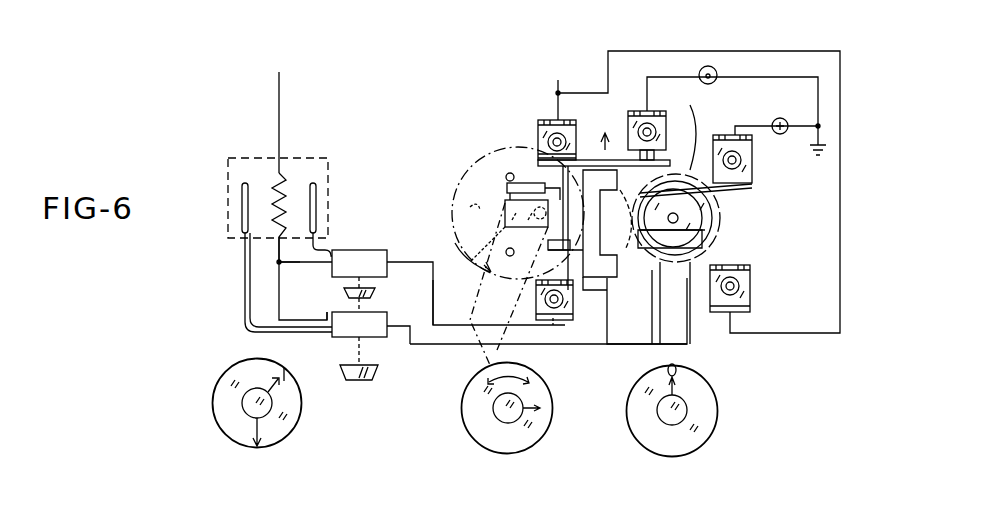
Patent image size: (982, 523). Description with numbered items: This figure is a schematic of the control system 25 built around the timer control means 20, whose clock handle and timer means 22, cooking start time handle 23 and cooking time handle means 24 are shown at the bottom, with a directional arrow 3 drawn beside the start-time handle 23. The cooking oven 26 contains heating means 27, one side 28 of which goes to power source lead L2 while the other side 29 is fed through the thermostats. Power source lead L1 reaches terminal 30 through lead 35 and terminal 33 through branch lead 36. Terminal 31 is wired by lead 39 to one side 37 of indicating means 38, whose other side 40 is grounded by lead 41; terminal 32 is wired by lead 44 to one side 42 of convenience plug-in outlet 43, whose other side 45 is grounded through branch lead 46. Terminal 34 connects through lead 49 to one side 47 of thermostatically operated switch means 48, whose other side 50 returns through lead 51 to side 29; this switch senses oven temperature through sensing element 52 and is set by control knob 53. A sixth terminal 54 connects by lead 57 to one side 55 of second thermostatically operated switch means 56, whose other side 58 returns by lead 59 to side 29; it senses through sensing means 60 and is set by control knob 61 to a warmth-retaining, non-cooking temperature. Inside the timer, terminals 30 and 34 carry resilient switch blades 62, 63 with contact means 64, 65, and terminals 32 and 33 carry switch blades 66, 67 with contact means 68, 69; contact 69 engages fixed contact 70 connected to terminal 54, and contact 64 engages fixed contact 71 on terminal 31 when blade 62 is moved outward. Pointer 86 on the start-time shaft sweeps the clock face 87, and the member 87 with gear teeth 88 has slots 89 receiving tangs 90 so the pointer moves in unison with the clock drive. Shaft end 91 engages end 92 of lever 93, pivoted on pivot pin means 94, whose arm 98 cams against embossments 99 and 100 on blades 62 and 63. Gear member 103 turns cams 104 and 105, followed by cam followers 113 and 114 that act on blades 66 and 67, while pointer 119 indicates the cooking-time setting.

The rotation direction arrow 3 is at (538, 408).
The timer control means 20 is at (512, 100).
The clock handle and timer means 22 is at (250, 413).
The cooking start time handle 23 is at (503, 418).
The cooking time handle means 24 is at (664, 418).
The system 25 is at (459, 57).
The cooking oven 26 is at (303, 155).
The heating means 27 is at (288, 200).
The side of heating means 28 is at (278, 170).
The other side of heating means 29 is at (287, 260).
The terminal 30 is at (552, 120).
The terminal 31 is at (650, 111).
The terminal 32 is at (752, 168).
The terminal 33 is at (750, 296).
The terminal 34 is at (550, 325).
The lead 35 is at (552, 112).
The branch lead 36 is at (746, 51).
The side of indicating means 37 is at (702, 70).
The indicating means 38 is at (712, 67).
The lead 39 is at (670, 77).
The other side of indicating means 40 is at (760, 88).
The lead 41 is at (778, 118).
The side of outlet 42 is at (768, 126).
The convenience plug-in outlet 43 is at (788, 122).
The lead 44 is at (735, 126).
The other side of outlet 45 is at (808, 128).
The branch lead 46 is at (811, 159).
The side of thermostatically operated switch means 47 is at (395, 262).
The thermostatically operated switch means 48 is at (365, 250).
The lead 49 is at (433, 290).
The other side of thermostatically operated switch means 50 is at (330, 255).
The lead 51 is at (292, 265).
The temperature sensing element 52 is at (318, 196).
The control knob 53 is at (378, 293).
The sixth terminal 54 is at (708, 232).
The side of second thermostatically operated switch means 55 is at (402, 345).
The second thermostatically operated switch means 56 is at (388, 320).
The lead 57 is at (435, 346).
The other side of second thermostatically operated switch means 58 is at (319, 303).
The lead 59 is at (281, 300).
The temperature sensing means 60 is at (242, 205).
The manually operated control knob 61 is at (372, 375).
The resilient switch blade 62 is at (650, 128).
The resilient switch blade 63 is at (613, 290).
The electrical contact means 64 is at (655, 156).
The electrical contact means 65 is at (629, 330).
The resilient switch blade 66 is at (689, 122).
The resilient switch blade 67 is at (673, 225).
The electrical contact means 68 is at (667, 223).
The electrical contact means 69 is at (611, 220).
The fixed contact means 70 is at (611, 273).
The fixed contact 71 is at (652, 150).
The pointer 86 is at (543, 400).
The gear member 87 is at (462, 160).
The gear teeth 88 is at (468, 207).
The slots 89 is at (524, 249).
The tangs 90 is at (509, 173).
The end of shaft means 91 is at (533, 180).
The end of lever 92 is at (500, 200).
The lever 93 is at (578, 160).
The pivot pin means 94 is at (568, 256).
The arm 98 is at (560, 322).
The cam means or embossment 99 is at (612, 150).
The cam means or embossment 100 is at (606, 328).
The gear member 103 is at (720, 248).
The cam 104 is at (703, 216).
The cam 105 is at (705, 258).
The cam follower 113 is at (700, 195).
The cam follower 114 is at (667, 303).
The pointer 119 is at (676, 390).
The power source lead L1 is at (555, 86).
The power source lead L2 is at (279, 110).